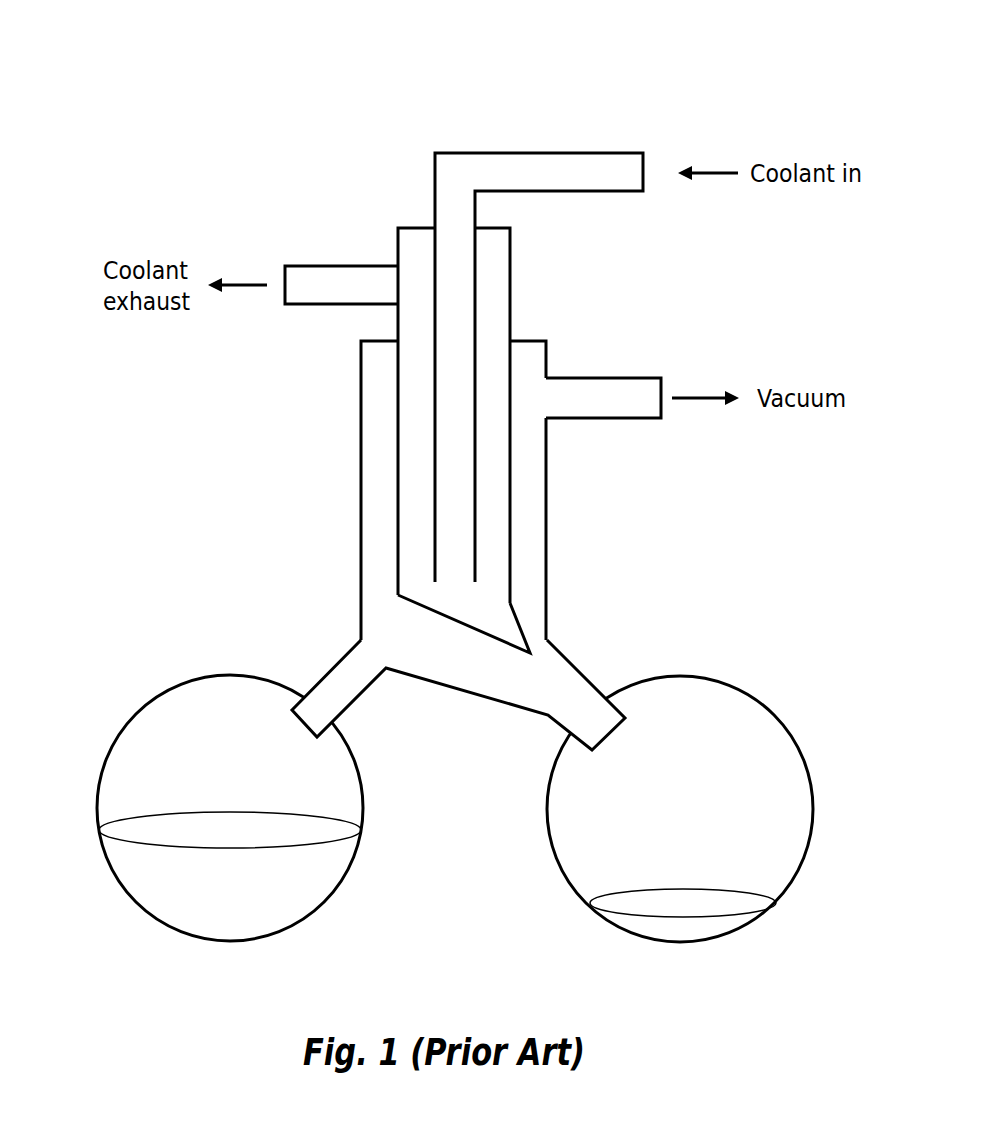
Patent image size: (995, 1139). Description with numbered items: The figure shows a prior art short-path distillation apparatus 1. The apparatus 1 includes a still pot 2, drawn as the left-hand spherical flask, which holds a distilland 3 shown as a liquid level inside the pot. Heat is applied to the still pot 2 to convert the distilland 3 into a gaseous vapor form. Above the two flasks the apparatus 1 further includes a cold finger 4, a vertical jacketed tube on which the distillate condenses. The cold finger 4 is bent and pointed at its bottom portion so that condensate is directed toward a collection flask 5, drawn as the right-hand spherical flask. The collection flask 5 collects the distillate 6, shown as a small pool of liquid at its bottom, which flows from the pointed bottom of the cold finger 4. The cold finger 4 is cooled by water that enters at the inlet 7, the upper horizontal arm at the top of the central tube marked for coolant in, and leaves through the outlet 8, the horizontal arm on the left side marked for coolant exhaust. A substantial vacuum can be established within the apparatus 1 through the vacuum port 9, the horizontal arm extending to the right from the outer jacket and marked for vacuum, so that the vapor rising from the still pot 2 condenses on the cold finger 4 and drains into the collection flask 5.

The short-path distillation apparatus 1 is at (209, 80).
The still pot 2 is at (138, 710).
The distilland 3 is at (173, 903).
The cold finger 4 is at (397, 548).
The collection flask 5 is at (722, 678).
The distillate 6 is at (689, 931).
The inlet 7 is at (560, 152).
The outlet 8 is at (323, 265).
The vacuum port 9 is at (625, 377).